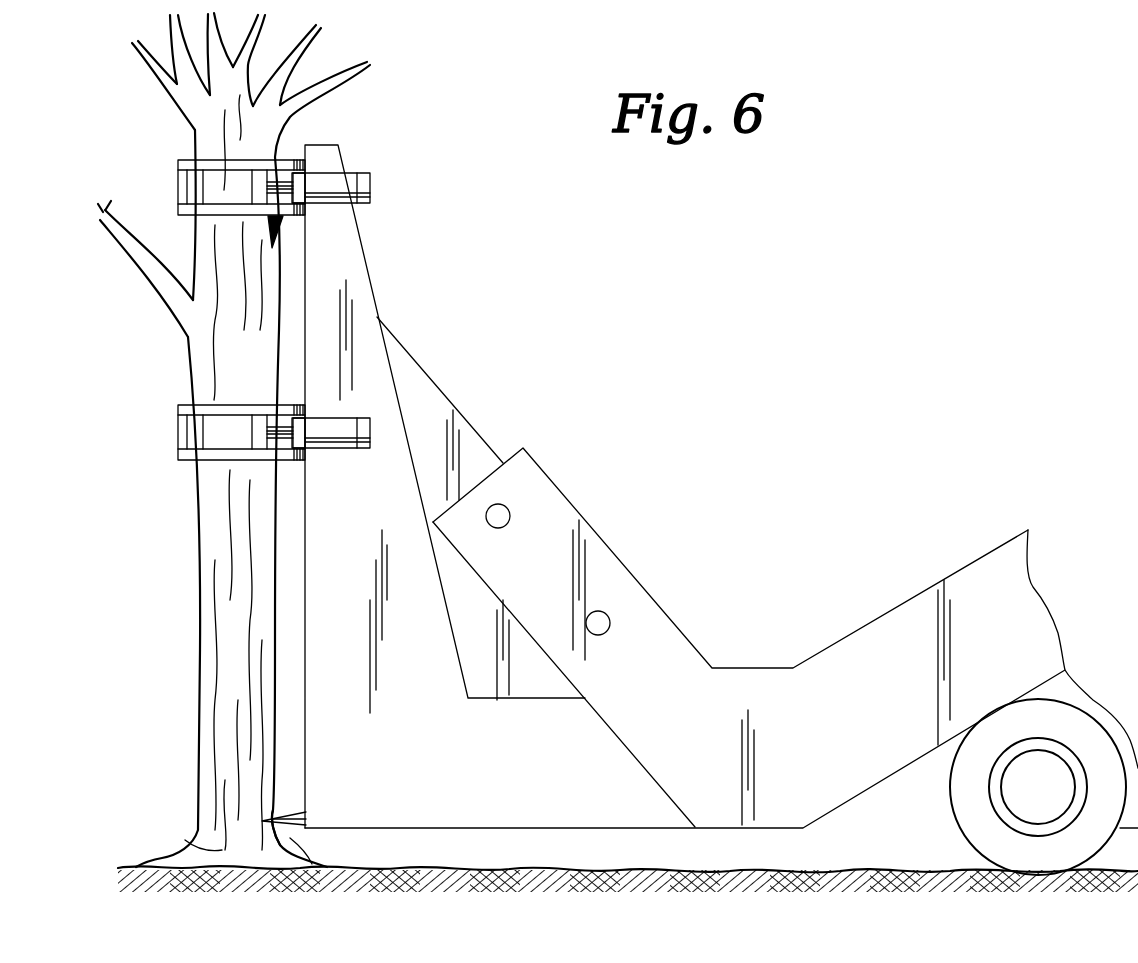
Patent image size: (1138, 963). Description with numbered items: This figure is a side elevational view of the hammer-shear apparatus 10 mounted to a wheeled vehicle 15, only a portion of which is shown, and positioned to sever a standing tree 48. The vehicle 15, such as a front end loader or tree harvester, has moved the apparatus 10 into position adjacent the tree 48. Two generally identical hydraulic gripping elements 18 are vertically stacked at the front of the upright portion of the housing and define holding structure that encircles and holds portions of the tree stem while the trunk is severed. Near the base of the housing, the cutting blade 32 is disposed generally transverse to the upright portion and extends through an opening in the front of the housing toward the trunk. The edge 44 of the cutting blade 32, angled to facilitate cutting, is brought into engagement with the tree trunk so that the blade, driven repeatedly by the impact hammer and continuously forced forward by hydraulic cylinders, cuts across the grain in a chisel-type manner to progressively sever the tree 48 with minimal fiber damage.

The hammer-shear apparatus 10 is at (440, 407).
The wheeled vehicle 15 is at (746, 688).
The hydraulic gripping elements 18 is at (187, 163).
The cutting blade 32 is at (290, 813).
The edge of the cutting blade 44 is at (282, 831).
The standing tree 48 is at (225, 550).